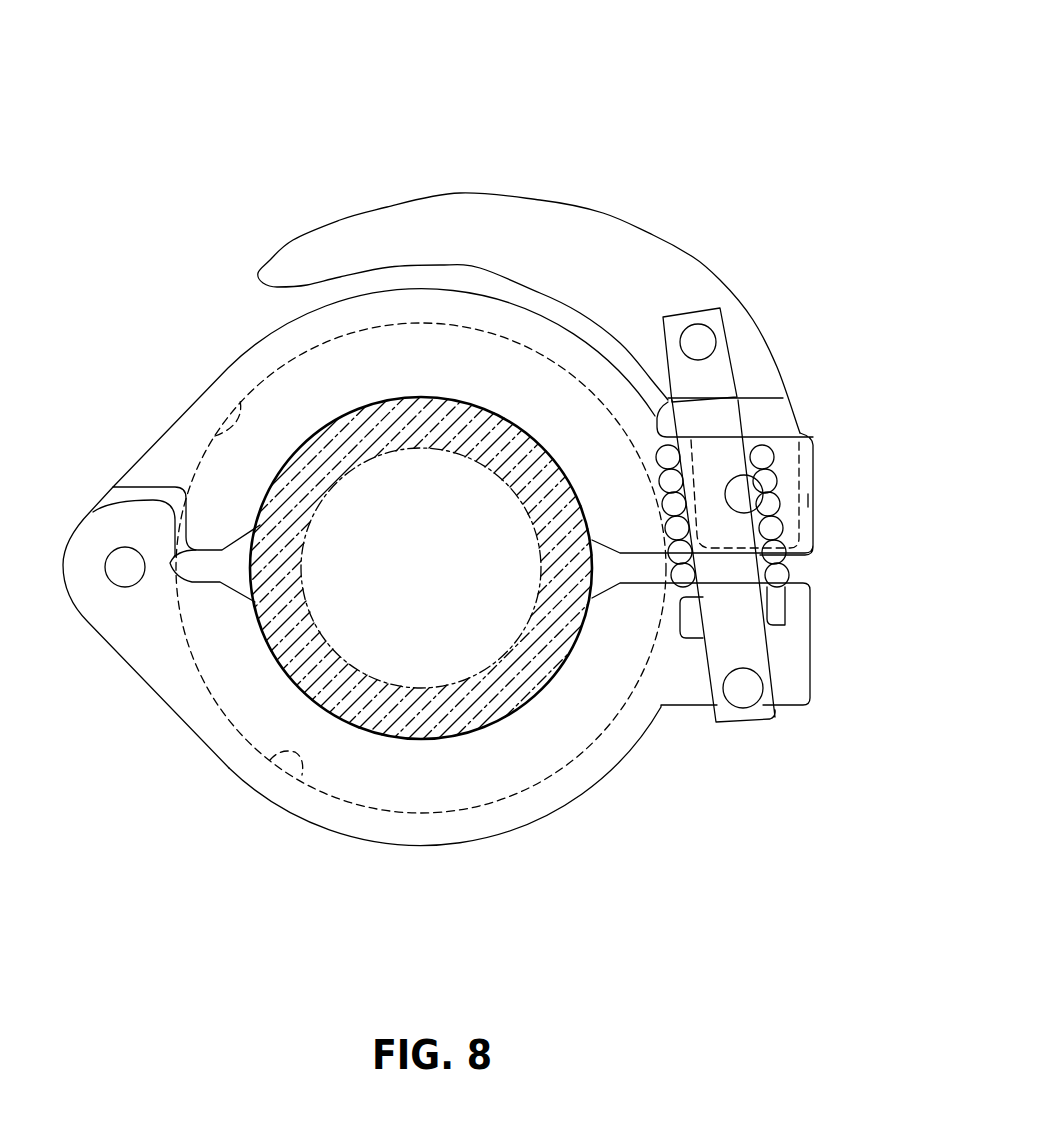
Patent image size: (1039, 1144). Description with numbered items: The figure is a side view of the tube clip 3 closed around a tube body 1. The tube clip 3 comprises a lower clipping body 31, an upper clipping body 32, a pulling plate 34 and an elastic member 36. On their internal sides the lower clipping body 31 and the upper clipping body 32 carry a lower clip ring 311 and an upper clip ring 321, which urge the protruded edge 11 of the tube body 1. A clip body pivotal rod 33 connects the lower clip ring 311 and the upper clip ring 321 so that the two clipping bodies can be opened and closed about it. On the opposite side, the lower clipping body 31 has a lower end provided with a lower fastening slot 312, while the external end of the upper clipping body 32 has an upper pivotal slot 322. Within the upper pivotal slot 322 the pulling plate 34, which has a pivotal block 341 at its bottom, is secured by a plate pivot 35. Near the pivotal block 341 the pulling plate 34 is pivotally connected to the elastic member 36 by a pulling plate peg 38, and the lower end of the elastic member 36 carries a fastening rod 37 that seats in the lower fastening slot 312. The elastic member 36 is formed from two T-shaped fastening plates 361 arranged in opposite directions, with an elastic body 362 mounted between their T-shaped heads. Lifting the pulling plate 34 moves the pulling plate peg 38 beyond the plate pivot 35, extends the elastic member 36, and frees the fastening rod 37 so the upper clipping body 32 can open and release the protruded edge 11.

The tube body 1 is at (385, 725).
The protruded edge 11 is at (443, 813).
The tube clip 3 is at (593, 193).
The lower clipping body 31 is at (330, 822).
The lower clip ring 311 is at (275, 765).
The lower fastening slot 312 is at (757, 717).
The upper clipping body 32 is at (263, 353).
The upper clip ring 321 is at (215, 436).
The upper pivotal slot 322 is at (813, 500).
The clip body pivotal rod 33 is at (125, 567).
The pulling plate 34 is at (382, 222).
The pivotal block 341 is at (800, 470).
The plate pivot 35 is at (732, 490).
The elastic member 36 is at (685, 654).
The T-shaped fastening plate 361 is at (708, 664).
The elastic body 362 is at (663, 587).
The fastening rod 37 is at (743, 692).
The pulling plate peg 38 is at (694, 347).